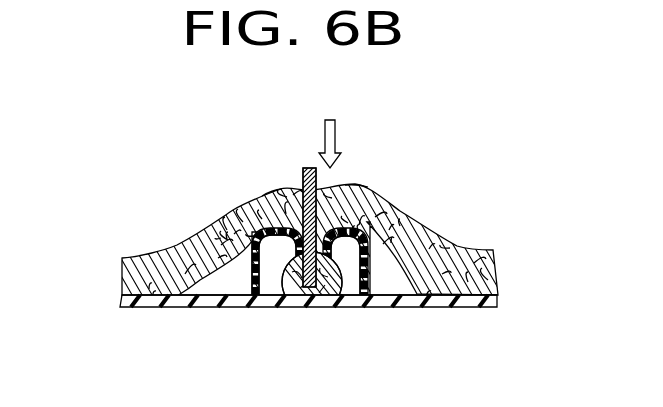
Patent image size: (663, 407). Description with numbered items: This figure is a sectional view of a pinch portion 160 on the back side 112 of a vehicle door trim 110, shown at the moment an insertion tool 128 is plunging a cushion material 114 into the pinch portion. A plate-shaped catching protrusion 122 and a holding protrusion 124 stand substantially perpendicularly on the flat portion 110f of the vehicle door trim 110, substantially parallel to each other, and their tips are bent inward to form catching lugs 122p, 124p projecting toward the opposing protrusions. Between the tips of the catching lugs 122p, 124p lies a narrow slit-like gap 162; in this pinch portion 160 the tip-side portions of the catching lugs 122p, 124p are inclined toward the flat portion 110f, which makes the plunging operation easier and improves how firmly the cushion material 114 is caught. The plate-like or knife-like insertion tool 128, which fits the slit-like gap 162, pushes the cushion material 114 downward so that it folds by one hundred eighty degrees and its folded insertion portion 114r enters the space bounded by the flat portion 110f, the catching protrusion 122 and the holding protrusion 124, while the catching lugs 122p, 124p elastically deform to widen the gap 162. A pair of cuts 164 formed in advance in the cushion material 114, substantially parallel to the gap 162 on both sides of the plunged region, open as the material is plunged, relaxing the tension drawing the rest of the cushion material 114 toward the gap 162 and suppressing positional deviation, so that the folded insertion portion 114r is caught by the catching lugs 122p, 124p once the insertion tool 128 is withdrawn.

The vehicle door trim 110 is at (180, 335).
The flat portion 110f is at (290, 273).
The back side 112 is at (433, 300).
The cushion material 114 is at (167, 228).
The folded insertion portion 114r is at (321, 298).
The catching protrusion 122 is at (256, 268).
The catching lug 122p is at (272, 192).
The holding protrusion 124 is at (372, 272).
The catching lug 124p is at (362, 187).
The insertion tool 128 is at (307, 167).
The pinch portion 160 is at (417, 227).
The slit-like gap 162 is at (280, 190).
The cut 164 is at (242, 204).